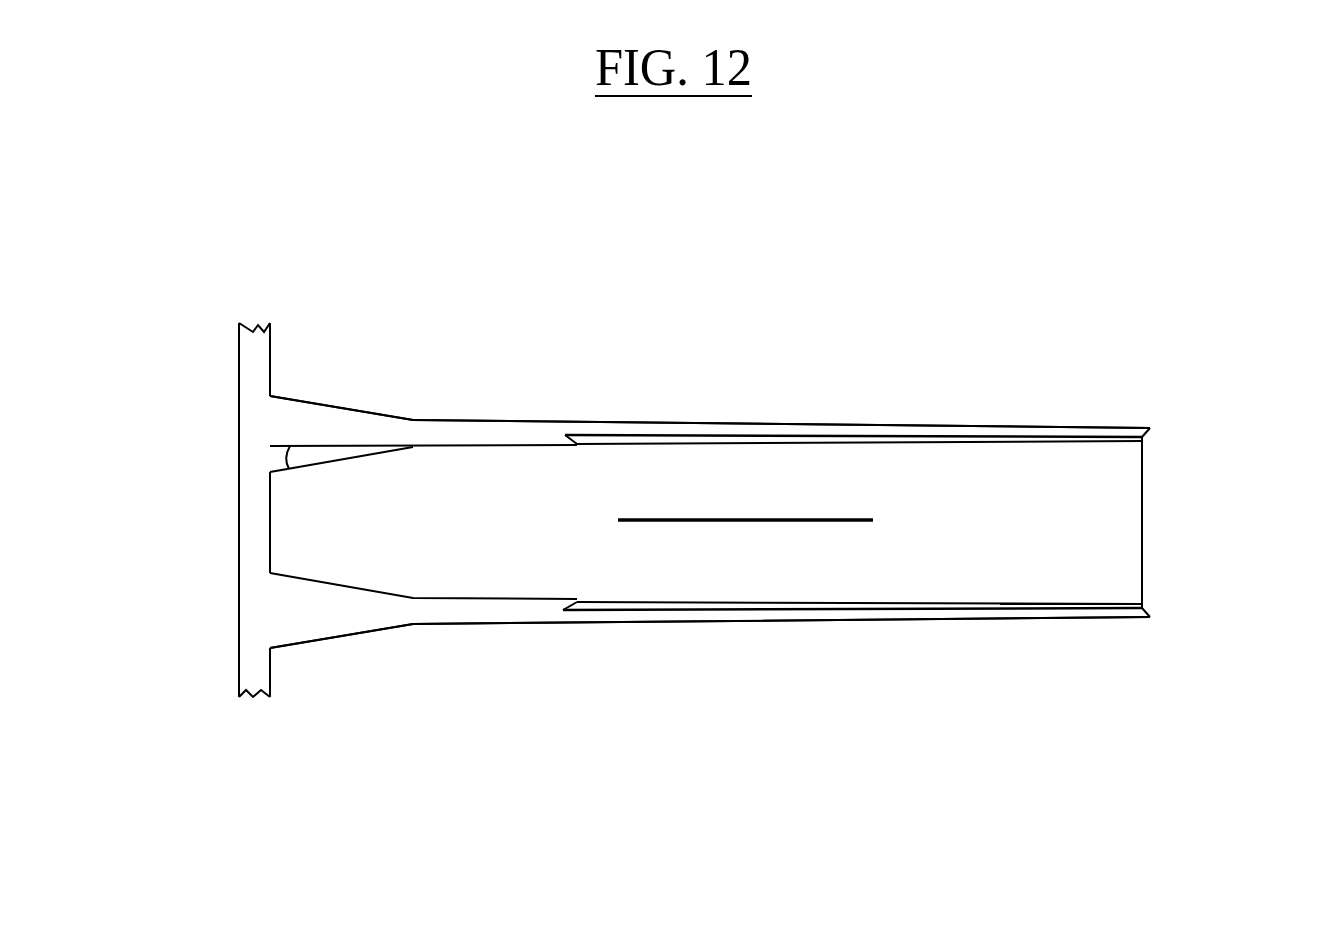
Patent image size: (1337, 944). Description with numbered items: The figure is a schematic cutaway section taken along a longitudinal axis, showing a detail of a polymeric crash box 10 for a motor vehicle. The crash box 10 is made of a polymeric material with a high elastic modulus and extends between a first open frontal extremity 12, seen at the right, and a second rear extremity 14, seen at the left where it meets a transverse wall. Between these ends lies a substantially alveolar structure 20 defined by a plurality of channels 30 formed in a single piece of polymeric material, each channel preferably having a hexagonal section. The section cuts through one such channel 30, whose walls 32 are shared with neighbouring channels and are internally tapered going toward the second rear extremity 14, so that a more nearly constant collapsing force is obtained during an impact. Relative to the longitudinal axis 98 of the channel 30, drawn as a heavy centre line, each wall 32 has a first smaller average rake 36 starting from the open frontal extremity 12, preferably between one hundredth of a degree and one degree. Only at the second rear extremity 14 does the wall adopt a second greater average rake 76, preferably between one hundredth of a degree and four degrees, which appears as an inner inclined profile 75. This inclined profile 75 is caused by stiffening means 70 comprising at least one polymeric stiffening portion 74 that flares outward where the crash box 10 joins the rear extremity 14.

The crash box 10 is at (1162, 235).
The first open frontal extremity 12 is at (1142, 518).
The second rear extremity 14 is at (243, 365).
The structure 20 is at (1204, 427).
The channel 30 is at (1088, 603).
The wall 32 is at (528, 433).
The first smaller average rake 36 is at (572, 442).
The stiffening means 70 is at (327, 384).
The stiffening portion 74 is at (297, 407).
The inner inclined profile 75 is at (343, 407).
The second greater average rake 76 is at (288, 458).
The longitudinal axis 98 is at (735, 520).